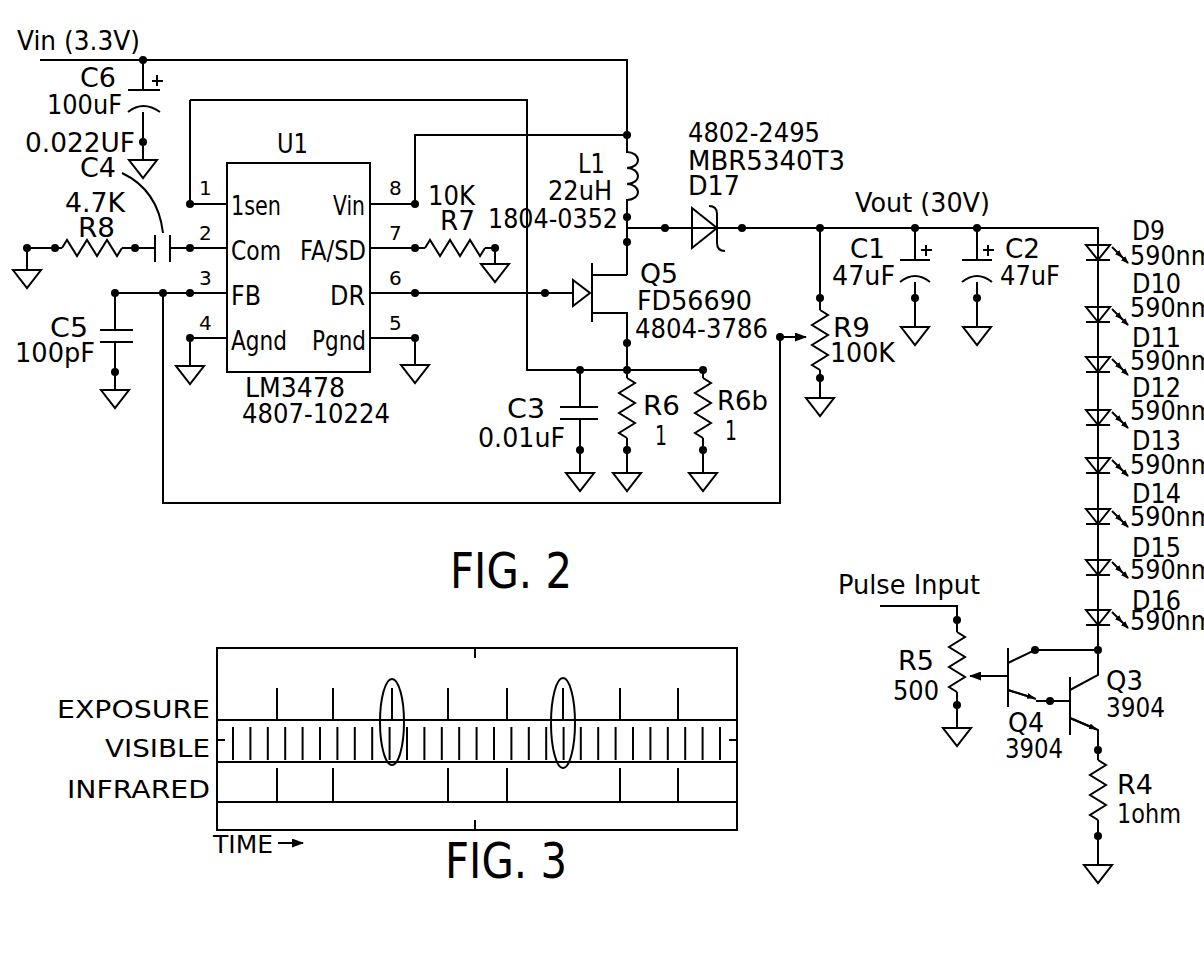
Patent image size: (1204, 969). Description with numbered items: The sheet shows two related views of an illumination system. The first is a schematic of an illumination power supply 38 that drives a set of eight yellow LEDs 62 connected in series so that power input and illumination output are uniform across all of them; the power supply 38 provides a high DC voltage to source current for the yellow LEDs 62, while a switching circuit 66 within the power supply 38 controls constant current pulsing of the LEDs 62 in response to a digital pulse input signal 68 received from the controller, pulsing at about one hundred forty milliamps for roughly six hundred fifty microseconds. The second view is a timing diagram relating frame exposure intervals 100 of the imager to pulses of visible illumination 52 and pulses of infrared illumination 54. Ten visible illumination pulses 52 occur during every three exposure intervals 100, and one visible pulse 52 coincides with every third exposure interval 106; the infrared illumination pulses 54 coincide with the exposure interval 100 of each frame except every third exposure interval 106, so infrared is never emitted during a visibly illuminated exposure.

In FIG. 2, the illumination power supply 38 is at (715, 542).
In FIG. 2, the yellow LEDs 62 is at (1092, 357).
In FIG. 2, the switching circuit 66 is at (921, 733).
In FIG. 2, the digital pulse input signal 68 is at (930, 567).
In FIG. 3, the frame exposure intervals 100 is at (331, 698).
In FIG. 3, the pulses of visible illumination 52 is at (370, 745).
In FIG. 3, the every third exposure interval 106 is at (404, 690).
In FIG. 3, the pulses of infrared illumination 54 is at (445, 785).